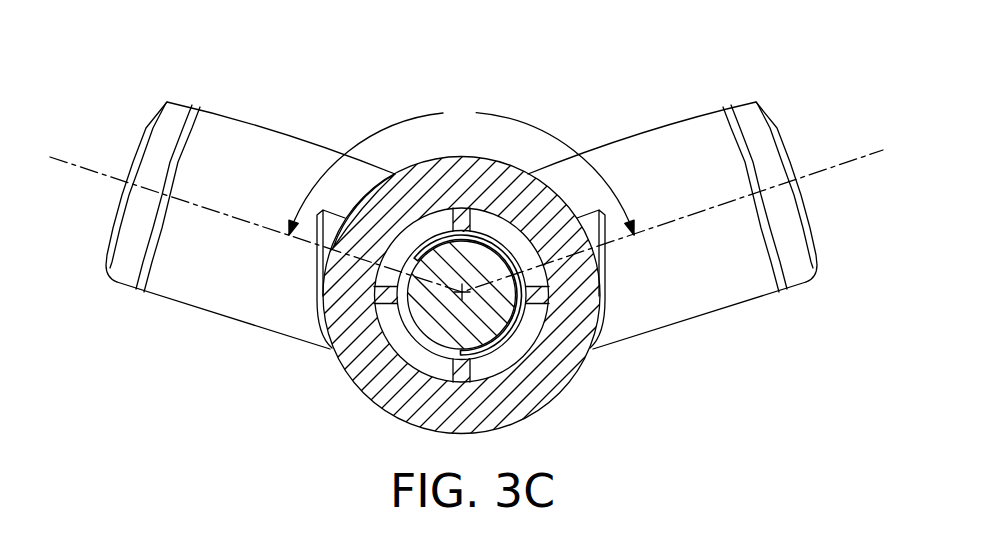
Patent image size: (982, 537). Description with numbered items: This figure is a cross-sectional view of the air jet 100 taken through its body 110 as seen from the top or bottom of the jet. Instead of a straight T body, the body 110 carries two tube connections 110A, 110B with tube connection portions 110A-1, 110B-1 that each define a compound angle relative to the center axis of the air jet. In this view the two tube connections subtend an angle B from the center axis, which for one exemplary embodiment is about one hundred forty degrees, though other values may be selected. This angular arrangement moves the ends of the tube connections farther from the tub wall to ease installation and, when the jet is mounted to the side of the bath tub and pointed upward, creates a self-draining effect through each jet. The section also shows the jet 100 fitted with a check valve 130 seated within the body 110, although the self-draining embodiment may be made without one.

The air jet 100 is at (97, 78).
The tube connection 110A is at (167, 99).
The tube connection 110A-1 is at (285, 153).
The tube connection 110B is at (740, 98).
The tube connection 110B-1 is at (649, 160).
The body 110 is at (375, 358).
The check valve 130 is at (485, 316).
The angle B is at (462, 170).